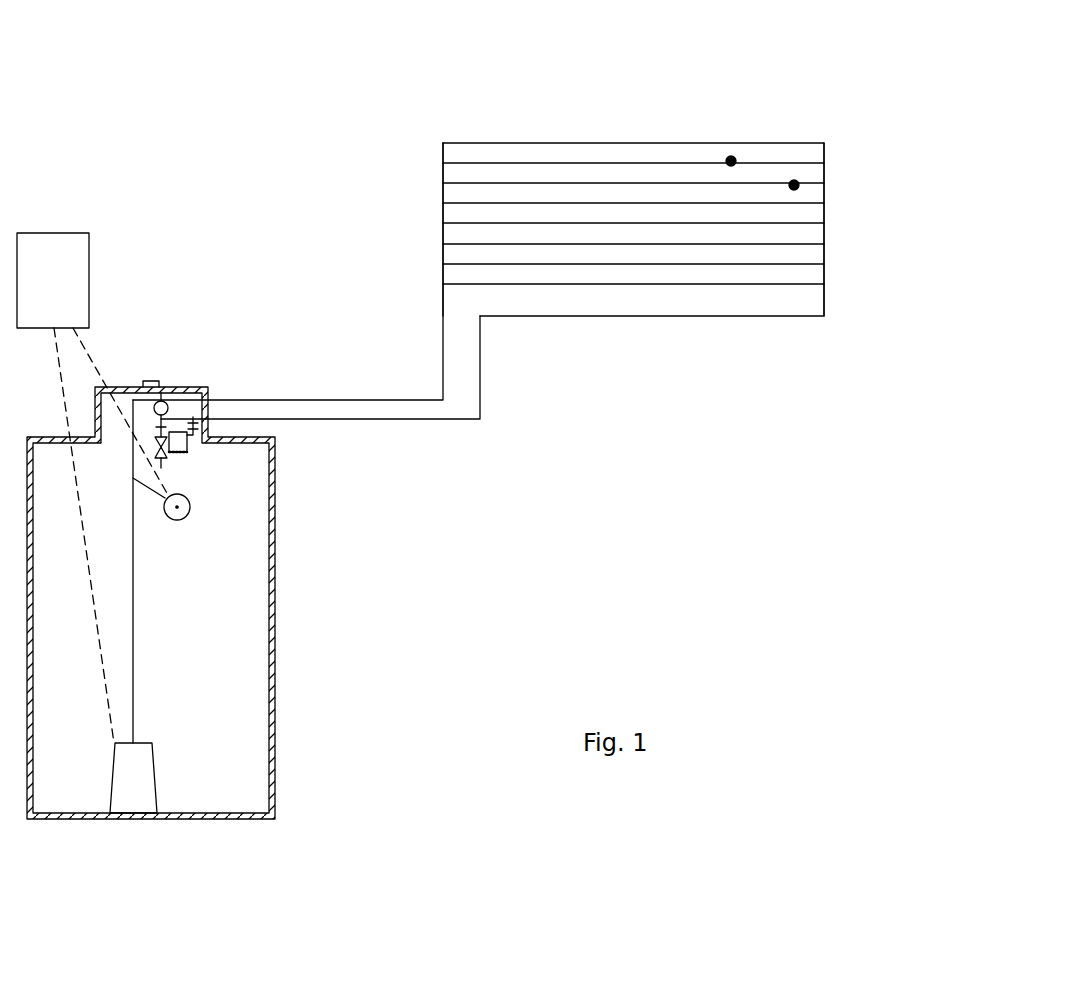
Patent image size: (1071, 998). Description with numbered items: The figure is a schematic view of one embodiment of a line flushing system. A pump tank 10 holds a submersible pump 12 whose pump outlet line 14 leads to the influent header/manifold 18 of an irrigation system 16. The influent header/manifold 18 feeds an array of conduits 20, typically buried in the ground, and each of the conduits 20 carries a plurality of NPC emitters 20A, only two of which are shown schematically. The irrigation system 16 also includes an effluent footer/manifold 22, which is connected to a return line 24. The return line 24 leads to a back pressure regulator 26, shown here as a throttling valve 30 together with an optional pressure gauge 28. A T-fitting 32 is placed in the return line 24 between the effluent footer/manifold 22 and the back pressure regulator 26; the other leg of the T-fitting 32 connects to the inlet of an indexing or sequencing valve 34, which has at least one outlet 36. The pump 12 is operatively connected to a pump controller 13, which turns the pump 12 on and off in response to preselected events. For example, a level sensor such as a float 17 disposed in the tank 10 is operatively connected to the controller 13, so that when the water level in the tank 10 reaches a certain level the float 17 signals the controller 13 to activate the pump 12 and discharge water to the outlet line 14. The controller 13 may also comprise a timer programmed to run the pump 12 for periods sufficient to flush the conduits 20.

The pump tank 10 is at (240, 823).
The submersible pump 12 is at (137, 777).
The pump controller 13 is at (63, 231).
The pump outlet line 14 is at (133, 618).
The irrigation system 16 is at (555, 139).
The float 17 is at (186, 517).
The influent header/manifold 18 is at (441, 216).
The conduits 20 is at (673, 203).
The NPC emitters 20A is at (794, 185).
The effluent footer/manifold 22 is at (828, 190).
The return line 24 is at (623, 316).
The back pressure regulator 26 is at (165, 398).
The pressure gauge 28 is at (169, 430).
The throttling valve 30 is at (158, 446).
The T-fitting 32 is at (200, 412).
The indexing or sequencing valve 34 is at (190, 452).
The outlet 36 is at (186, 456).